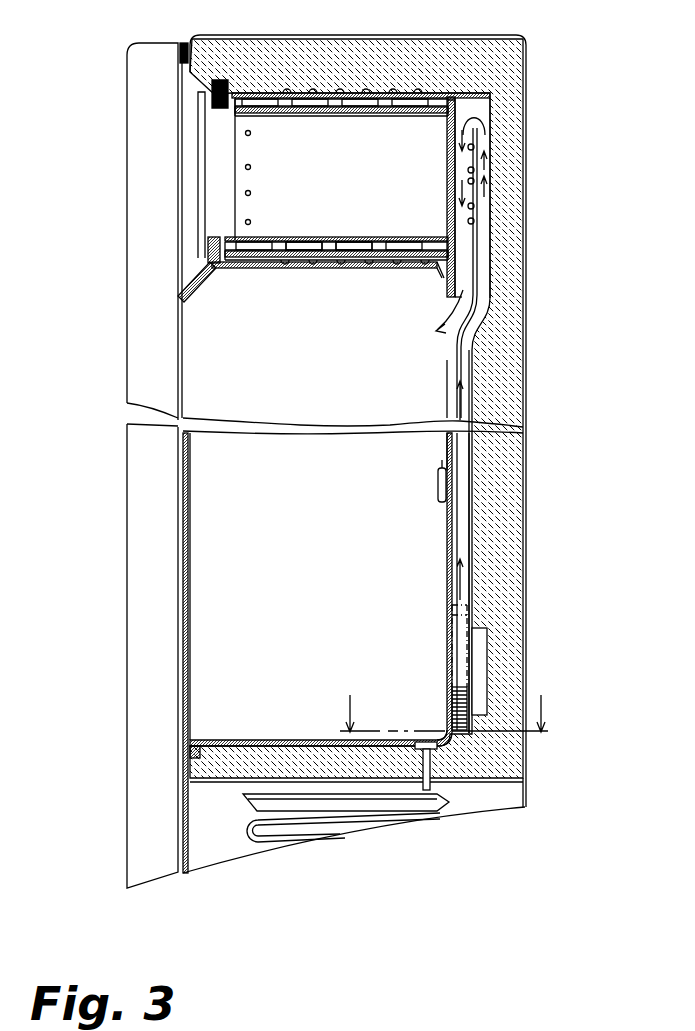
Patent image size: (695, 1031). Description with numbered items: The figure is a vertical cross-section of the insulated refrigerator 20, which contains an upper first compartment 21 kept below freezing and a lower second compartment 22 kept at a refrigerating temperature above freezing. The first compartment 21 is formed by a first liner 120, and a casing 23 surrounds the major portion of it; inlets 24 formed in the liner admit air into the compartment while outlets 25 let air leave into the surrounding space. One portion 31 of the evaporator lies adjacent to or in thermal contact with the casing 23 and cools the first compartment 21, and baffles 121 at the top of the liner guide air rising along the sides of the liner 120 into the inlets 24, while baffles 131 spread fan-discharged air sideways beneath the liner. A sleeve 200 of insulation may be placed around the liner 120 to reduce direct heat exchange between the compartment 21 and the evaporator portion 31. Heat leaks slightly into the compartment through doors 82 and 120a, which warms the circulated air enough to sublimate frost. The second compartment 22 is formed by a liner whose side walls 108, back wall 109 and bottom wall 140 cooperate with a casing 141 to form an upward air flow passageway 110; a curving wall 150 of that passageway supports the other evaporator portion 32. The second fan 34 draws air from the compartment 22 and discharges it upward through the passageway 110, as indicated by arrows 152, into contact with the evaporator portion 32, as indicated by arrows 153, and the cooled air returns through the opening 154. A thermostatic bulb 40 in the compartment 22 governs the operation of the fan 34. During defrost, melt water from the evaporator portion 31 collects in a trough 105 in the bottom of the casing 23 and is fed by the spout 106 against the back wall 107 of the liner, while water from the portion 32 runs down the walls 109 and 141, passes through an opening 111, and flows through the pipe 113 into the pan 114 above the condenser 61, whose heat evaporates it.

The insulated refrigerator 20 is at (626, 491).
The first compartment 21 is at (356, 195).
The second compartment 22 is at (310, 571).
The casing 23 is at (432, 97).
The inlets 24 is at (435, 112).
The outlets 25 is at (251, 133).
The evaporator portion 31 is at (395, 94).
The evaporator portion 32 is at (478, 183).
The second fan 34 is at (462, 665).
The thermostatic bulb 40 is at (438, 495).
The refrigerant condenser 61 is at (245, 842).
The door 82 is at (133, 332).
The trough 105 is at (410, 270).
The spout 106 is at (440, 280).
The back wall 107 is at (448, 398).
The liner 108 is at (320, 500).
The back wall 109 is at (452, 465).
The air flow passageway 110 is at (462, 535).
The opening 111 is at (445, 732).
The pipe 113 is at (435, 790).
The pan 114 is at (250, 806).
The first liner 120 is at (375, 238).
The door 120a is at (215, 210).
The baffles 121 is at (360, 108).
The baffles 131 is at (300, 245).
The bottom wall 140 is at (242, 742).
The casing 141 is at (490, 250).
The curving wall 150 is at (470, 318).
The arrows 152 is at (462, 398).
The arrows 153 is at (483, 120).
The opening 154 is at (463, 327).
The sleeve of insulation 200 is at (313, 228).